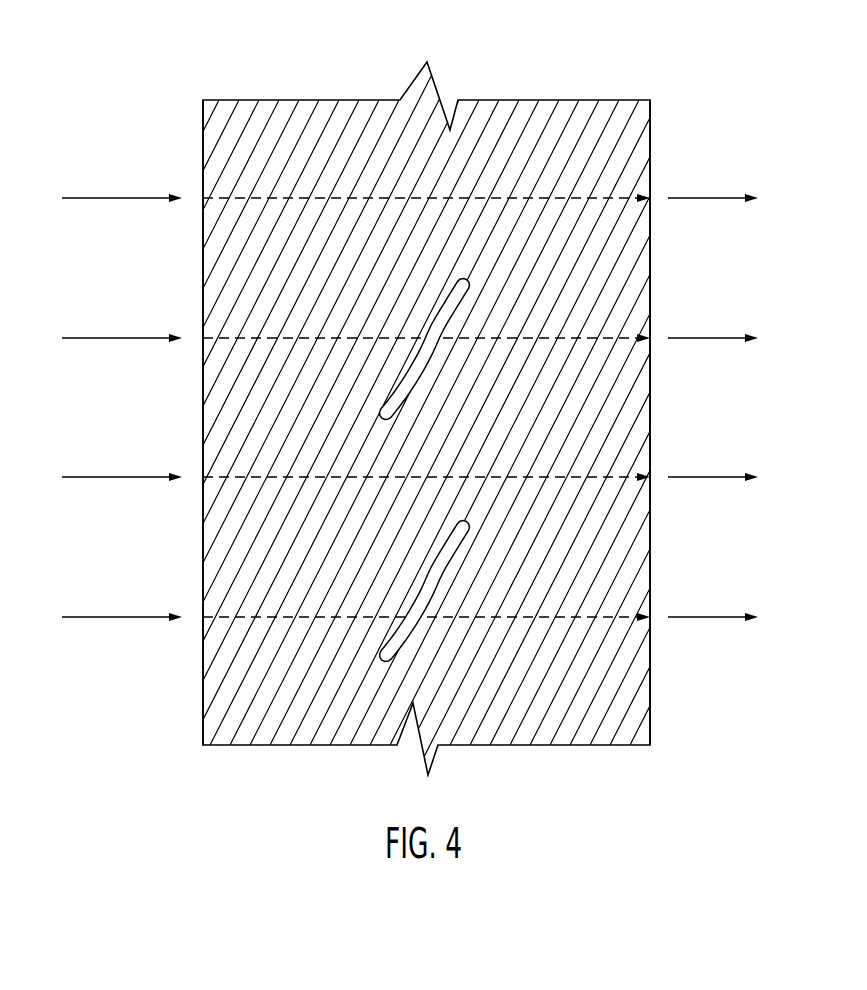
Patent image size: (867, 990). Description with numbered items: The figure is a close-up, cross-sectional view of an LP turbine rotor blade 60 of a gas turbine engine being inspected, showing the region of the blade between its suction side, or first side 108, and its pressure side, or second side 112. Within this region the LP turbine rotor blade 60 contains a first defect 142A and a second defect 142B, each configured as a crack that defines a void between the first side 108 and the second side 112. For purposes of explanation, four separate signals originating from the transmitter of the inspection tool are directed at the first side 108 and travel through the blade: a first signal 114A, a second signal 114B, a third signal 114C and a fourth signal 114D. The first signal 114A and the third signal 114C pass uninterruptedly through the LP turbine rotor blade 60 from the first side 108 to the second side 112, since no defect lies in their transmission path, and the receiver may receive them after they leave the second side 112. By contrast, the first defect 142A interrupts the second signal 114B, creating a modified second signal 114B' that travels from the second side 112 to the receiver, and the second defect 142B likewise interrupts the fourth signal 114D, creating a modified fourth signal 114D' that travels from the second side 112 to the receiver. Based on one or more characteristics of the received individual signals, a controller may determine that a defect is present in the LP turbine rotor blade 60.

The LP turbine rotor blade 60 is at (567, 100).
The first side 108 is at (176, 99).
The second side 112 is at (691, 104).
The first signal 114A is at (135, 198).
The second signal 114B is at (356, 305).
The modified second signal 114B' is at (713, 305).
The third signal 114C is at (135, 477).
The fourth signal 114D is at (356, 584).
The modified fourth signal 114D' is at (713, 583).
The first defect 142A is at (472, 300).
The second defect 142B is at (386, 640).